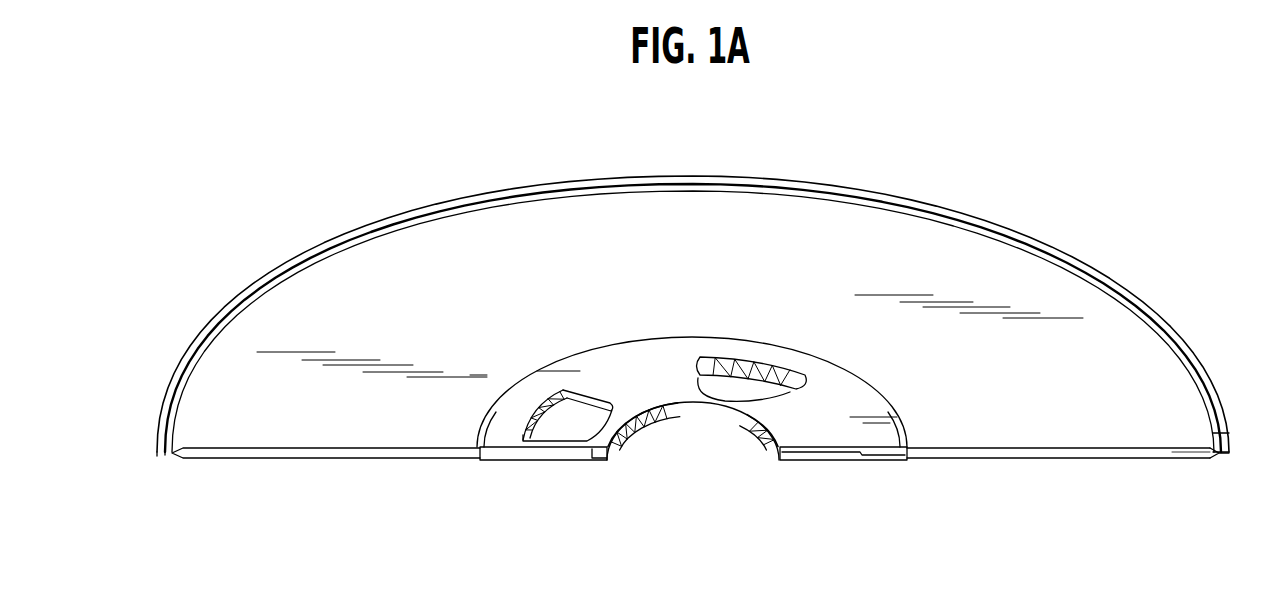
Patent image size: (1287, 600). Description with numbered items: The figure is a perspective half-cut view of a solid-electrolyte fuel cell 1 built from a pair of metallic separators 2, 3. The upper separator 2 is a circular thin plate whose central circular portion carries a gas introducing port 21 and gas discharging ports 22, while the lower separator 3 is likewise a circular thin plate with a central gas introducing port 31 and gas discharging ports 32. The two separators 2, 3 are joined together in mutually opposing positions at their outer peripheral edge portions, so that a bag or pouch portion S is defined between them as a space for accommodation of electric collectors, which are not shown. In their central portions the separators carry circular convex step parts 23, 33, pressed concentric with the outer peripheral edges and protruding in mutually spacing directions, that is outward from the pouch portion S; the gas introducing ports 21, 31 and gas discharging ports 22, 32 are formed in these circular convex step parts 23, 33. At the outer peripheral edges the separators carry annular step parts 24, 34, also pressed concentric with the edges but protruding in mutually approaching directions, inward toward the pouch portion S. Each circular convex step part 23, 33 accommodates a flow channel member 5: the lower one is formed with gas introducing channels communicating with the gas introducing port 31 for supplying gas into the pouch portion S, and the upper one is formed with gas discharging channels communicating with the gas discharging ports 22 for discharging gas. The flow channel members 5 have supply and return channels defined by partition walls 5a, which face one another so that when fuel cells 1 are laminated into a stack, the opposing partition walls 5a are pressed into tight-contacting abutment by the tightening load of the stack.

The solid-electrolyte fuel cell 1 is at (1013, 184).
The separator 2 is at (319, 250).
The separator 3 is at (1004, 459).
The flow channel member 5 is at (627, 417).
The partition wall 5a is at (740, 362).
The gas introducing port 21 is at (703, 360).
The gas discharging port 22 is at (593, 388).
The circular convex step part 23 is at (505, 447).
The annular step part 24 is at (1216, 434).
The gas introducing port 31 is at (723, 402).
The gas discharging port 32 is at (570, 432).
The circular convex step part 33 is at (507, 463).
The annular step part 34 is at (1219, 460).
The pouch portion S is at (1172, 452).